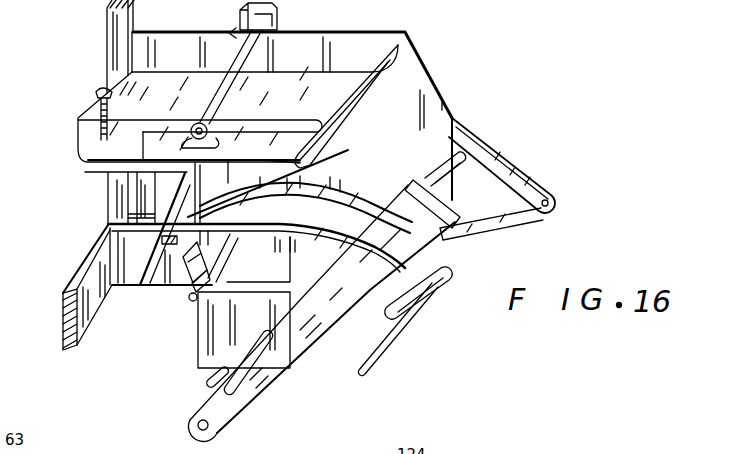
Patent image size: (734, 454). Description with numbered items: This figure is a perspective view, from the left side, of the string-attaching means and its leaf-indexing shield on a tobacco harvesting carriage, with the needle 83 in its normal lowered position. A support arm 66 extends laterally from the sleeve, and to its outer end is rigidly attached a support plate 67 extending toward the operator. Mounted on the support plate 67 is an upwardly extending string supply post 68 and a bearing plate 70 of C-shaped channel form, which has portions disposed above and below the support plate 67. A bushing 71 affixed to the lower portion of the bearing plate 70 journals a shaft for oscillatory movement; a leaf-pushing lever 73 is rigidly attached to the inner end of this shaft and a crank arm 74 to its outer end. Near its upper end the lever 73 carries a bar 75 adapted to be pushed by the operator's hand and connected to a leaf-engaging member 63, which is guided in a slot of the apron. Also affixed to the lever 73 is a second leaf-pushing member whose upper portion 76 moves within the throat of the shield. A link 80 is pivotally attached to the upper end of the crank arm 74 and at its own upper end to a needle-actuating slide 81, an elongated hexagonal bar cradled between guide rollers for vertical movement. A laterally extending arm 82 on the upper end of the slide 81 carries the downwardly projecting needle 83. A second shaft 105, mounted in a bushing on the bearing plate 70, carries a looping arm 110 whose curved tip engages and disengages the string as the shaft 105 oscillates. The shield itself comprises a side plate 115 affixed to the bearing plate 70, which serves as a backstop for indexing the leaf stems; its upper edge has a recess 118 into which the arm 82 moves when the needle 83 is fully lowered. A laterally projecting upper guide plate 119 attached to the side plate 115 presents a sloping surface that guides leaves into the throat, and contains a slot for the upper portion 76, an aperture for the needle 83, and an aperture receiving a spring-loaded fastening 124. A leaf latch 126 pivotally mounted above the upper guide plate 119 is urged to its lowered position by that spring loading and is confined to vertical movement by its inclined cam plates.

The leaf-engaging member 63 is at (413, 327).
The support arm 66 is at (77, 277).
The support plate 67 is at (162, 275).
The string supply post 68 is at (107, 23).
The bearing plate 70 is at (200, 352).
The bushing 71 is at (200, 380).
The leaf-pushing lever 73 is at (308, 337).
The crank arm 74 is at (488, 232).
The bar 75 is at (433, 263).
The upper portion of second leaf-pushing member 76 is at (442, 163).
The link 80 is at (495, 162).
The needle-actuating slide 81 is at (277, 20).
The laterally extending arm 82 is at (232, 85).
The needle 83 is at (195, 215).
The shaft 105 is at (230, 249).
The looping arm 110 is at (217, 315).
The side plate 115 is at (422, 83).
The recess 118 is at (233, 32).
The upper guide plate 119 is at (333, 87).
The fastening 124 is at (98, 90).
The leaf latch 126 is at (143, 133).